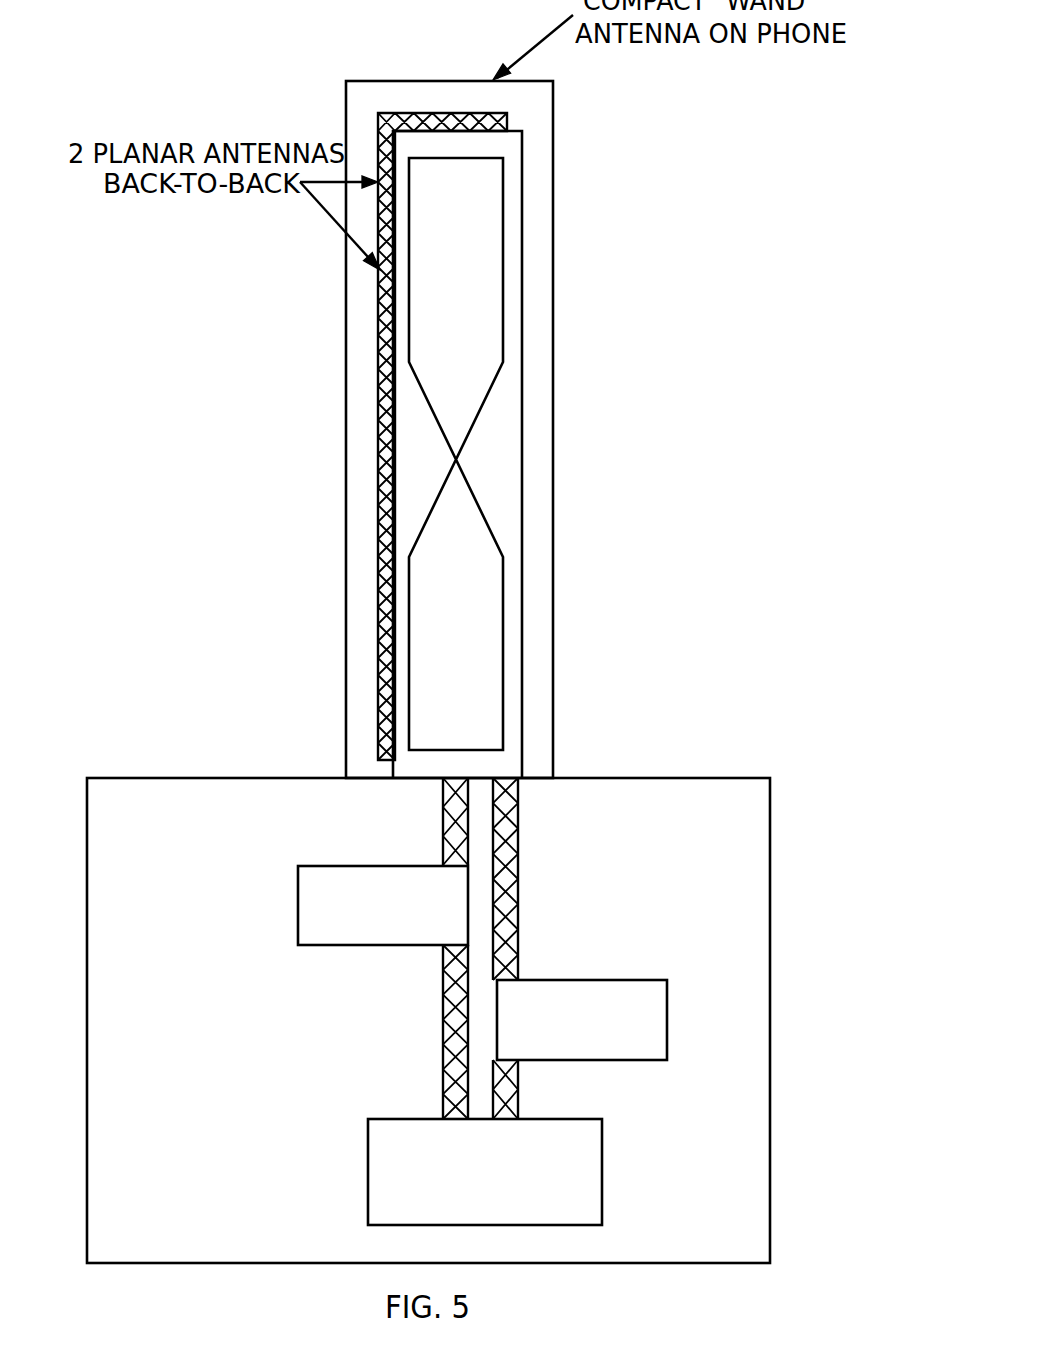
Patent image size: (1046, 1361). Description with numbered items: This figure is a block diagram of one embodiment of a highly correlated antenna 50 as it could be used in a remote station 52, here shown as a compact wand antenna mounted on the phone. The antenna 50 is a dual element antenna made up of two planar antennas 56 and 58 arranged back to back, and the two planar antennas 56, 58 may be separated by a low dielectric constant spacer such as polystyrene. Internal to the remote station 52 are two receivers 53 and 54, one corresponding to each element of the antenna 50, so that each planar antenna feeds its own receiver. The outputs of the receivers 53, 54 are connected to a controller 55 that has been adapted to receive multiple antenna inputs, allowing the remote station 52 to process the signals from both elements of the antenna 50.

The highly correlated antenna 50 is at (553, 602).
The remote station 52 is at (663, 778).
The receiver 53 is at (608, 978).
The receiver 54 is at (353, 866).
The controller 55 is at (545, 1118).
The planar antenna 56 is at (490, 390).
The planar antenna 58 is at (378, 350).